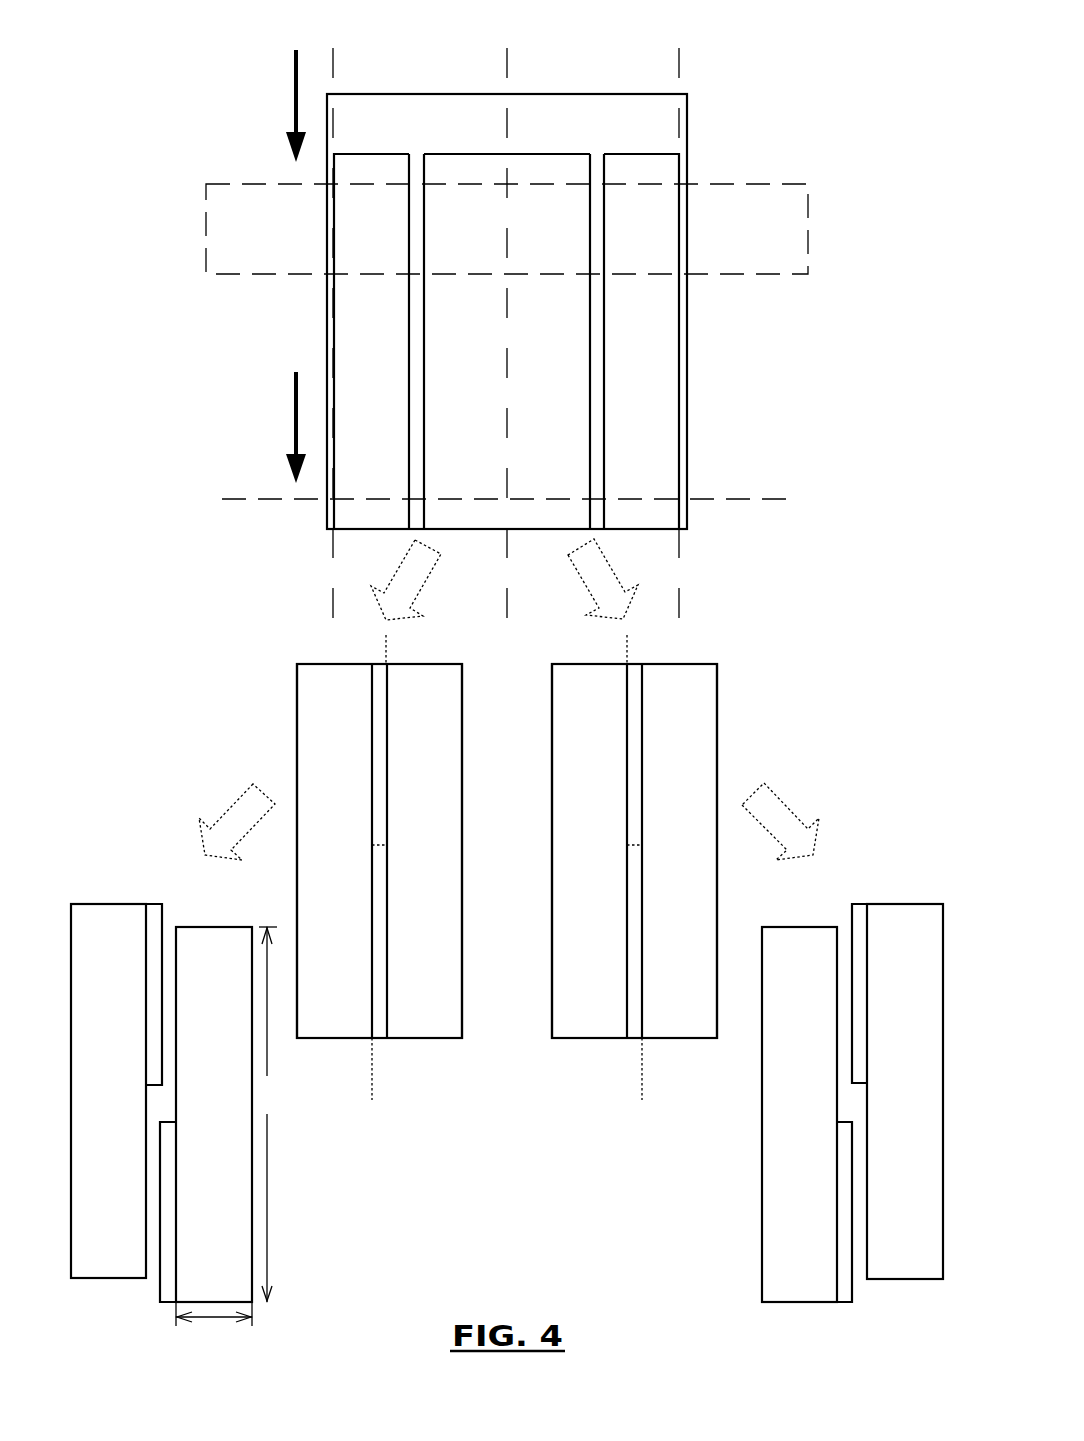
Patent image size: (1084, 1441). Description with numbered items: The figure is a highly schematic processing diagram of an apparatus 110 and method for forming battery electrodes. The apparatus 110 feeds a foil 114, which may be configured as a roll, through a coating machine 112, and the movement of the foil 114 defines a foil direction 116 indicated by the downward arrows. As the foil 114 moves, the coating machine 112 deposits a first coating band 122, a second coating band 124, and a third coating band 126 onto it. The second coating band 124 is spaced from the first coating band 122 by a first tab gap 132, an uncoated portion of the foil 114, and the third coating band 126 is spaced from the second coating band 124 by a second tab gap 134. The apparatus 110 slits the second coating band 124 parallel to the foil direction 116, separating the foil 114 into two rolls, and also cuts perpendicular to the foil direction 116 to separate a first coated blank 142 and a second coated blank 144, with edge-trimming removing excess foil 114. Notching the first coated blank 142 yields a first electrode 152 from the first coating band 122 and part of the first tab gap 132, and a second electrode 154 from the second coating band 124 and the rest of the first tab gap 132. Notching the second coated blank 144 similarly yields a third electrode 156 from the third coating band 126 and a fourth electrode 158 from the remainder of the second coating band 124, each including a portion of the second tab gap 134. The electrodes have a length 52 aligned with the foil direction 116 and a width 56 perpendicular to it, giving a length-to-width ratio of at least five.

The apparatus 110 is at (152, 90).
The coating machine 112 is at (206, 237).
The foil 114 is at (470, 102).
The foil direction 116 is at (293, 108).
The first coating band 122 is at (396, 251).
The second coating band 124 is at (486, 232).
The third coating band 126 is at (663, 242).
The first tab gap 132 is at (415, 382).
The second tab gap 134 is at (600, 325).
The first coated blank 142 is at (256, 678).
The second coated blank 144 is at (760, 686).
The first electrode 152 is at (128, 1099).
The second electrode 154 is at (238, 1196).
The third electrode 156 is at (823, 1174).
The fourth electrode 158 is at (928, 1084).
The length 52 is at (272, 1114).
The width 56 is at (213, 1319).